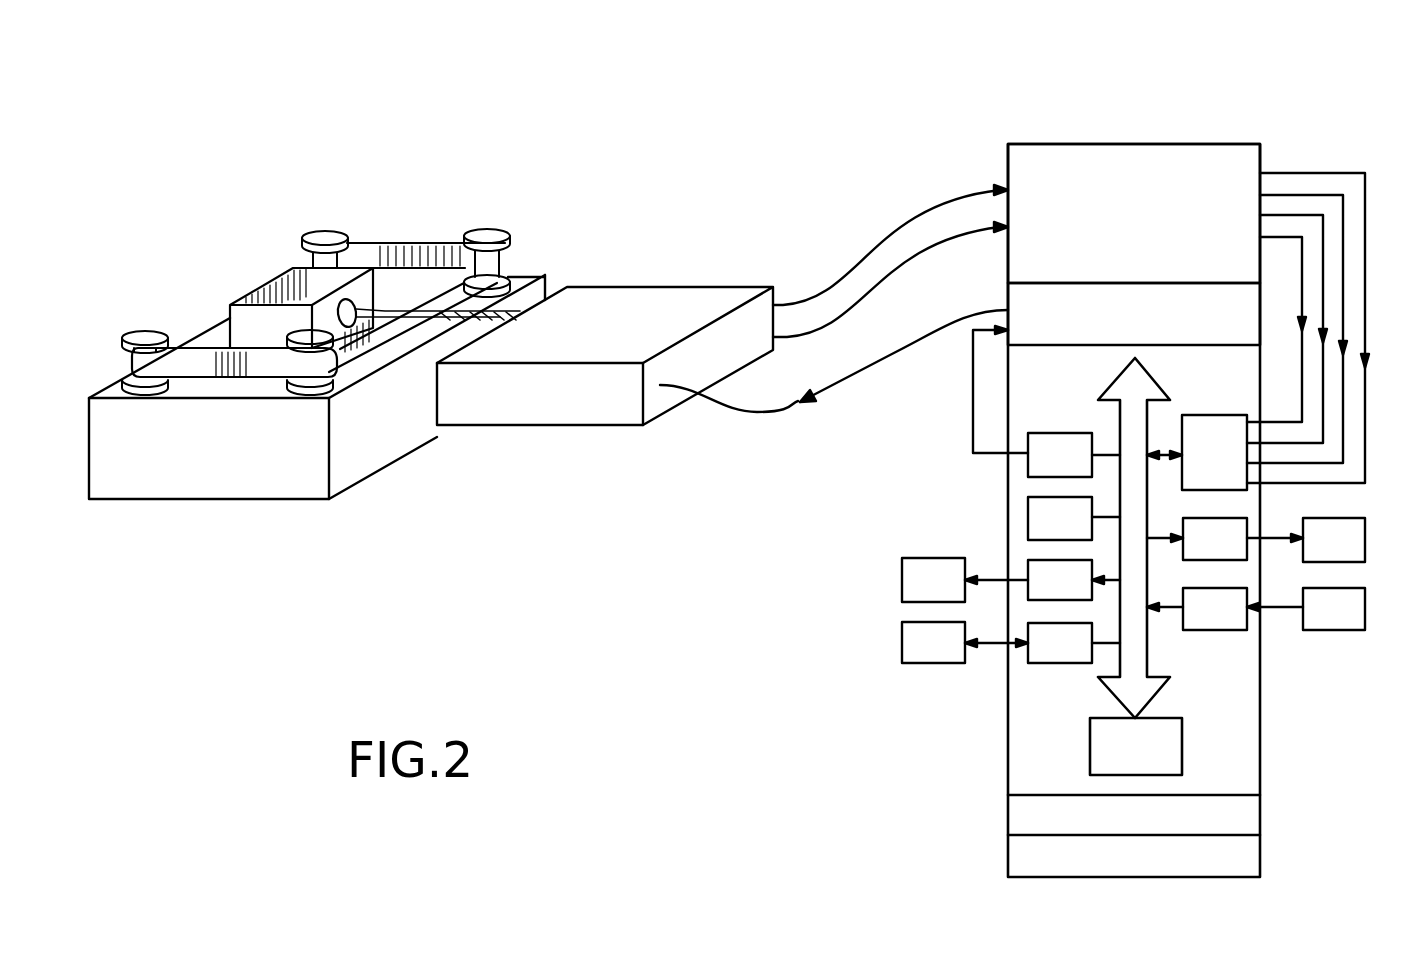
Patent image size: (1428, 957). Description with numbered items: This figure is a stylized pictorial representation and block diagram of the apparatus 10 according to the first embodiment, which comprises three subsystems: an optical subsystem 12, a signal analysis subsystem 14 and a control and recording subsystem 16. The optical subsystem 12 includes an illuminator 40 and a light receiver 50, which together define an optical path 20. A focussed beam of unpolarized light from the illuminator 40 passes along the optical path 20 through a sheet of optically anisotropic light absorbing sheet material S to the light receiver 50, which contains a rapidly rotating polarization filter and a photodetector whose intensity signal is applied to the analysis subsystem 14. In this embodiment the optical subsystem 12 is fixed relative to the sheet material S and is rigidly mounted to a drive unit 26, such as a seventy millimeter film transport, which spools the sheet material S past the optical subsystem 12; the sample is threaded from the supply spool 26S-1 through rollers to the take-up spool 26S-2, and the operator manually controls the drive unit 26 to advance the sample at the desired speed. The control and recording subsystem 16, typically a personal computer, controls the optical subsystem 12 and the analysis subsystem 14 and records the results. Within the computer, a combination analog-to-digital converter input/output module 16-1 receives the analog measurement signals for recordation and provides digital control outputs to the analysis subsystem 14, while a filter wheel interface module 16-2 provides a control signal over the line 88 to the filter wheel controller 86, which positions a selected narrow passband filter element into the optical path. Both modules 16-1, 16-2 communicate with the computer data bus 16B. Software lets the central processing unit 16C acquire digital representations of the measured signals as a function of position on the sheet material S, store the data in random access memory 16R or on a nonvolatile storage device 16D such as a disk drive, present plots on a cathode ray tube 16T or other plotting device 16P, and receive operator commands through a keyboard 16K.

The apparatus 10 is at (1195, 87).
The optical subsystem 12 is at (508, 150).
The signal analysis subsystem 14 is at (1134, 213).
The control and recording subsystem 16 is at (1261, 732).
The computer data bus 16B is at (1159, 380).
The central processing unit 16C is at (1136, 746).
The nonvolatile storage device 16D is at (1011, 642).
The keyboard 16K is at (1256, 609).
The plotting device 16P is at (1011, 580).
The random access memory 16R is at (1074, 518).
The cathode ray tube 16T is at (1256, 540).
The analog-to-digital converter input/output module 16-1 is at (1258, 331).
The filter wheel interface module 16-2 is at (1046, 401).
The optical path 20 is at (473, 318).
The drive unit 26 is at (197, 500).
The supply spool 26S-1 is at (151, 332).
The take-up spool 26S-2 is at (320, 236).
The illuminator 40 is at (338, 290).
The light receiver 50 is at (596, 306).
The controller 86 is at (1134, 314).
The line 88 is at (889, 356).
The sheet material S is at (198, 362).